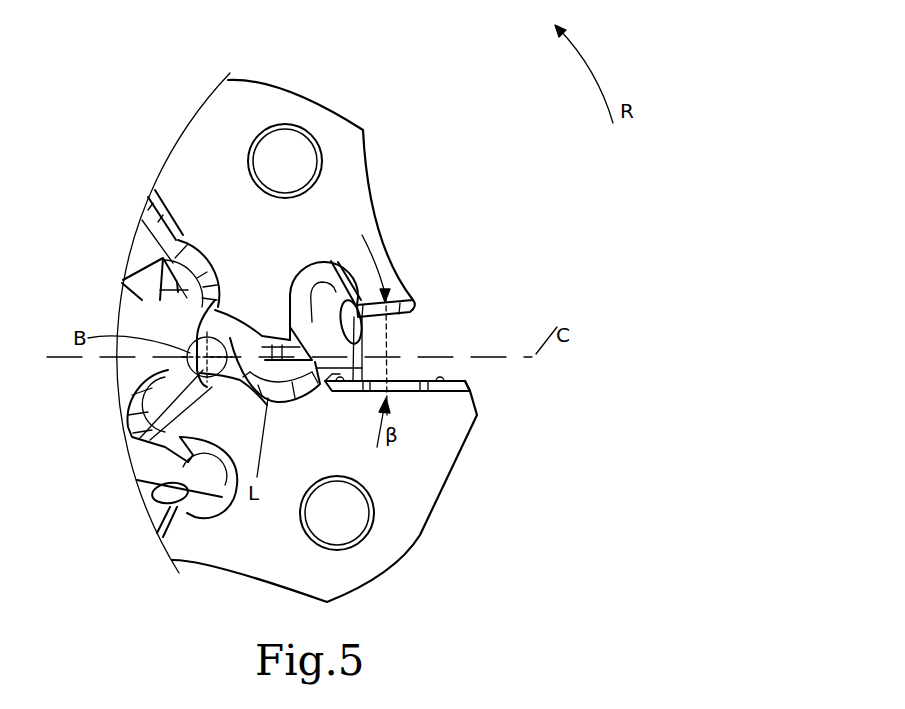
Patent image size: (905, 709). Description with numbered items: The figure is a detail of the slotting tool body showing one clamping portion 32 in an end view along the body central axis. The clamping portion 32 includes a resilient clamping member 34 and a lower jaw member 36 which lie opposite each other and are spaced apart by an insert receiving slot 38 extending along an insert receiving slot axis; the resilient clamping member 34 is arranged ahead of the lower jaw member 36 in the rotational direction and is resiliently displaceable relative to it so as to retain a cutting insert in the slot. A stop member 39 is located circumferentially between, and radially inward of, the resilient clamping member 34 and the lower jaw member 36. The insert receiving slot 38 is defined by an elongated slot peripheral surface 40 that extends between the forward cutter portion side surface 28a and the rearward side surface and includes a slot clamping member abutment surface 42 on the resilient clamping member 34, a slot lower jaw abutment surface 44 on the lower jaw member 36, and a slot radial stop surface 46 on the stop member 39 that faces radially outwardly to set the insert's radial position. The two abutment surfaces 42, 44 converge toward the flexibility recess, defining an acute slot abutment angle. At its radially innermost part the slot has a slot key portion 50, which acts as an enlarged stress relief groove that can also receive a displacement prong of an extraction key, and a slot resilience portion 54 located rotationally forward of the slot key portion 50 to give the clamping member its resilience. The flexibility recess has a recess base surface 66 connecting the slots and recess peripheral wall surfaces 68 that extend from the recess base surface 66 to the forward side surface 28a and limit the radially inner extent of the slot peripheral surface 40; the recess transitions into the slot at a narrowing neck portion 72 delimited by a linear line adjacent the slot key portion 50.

The forward cutter portion side surface 28a is at (294, 552).
The clamping portion 32 is at (462, 165).
The resilient clamping member 34 is at (348, 192).
The lower jaw member 36 is at (440, 447).
The insert receiving slot 38 is at (433, 337).
The stop member 39 is at (280, 322).
The slot peripheral surface 40 is at (397, 317).
The slot clamping member abutment surface 42 is at (363, 310).
The slot lower jaw abutment surface 44 is at (338, 381).
The slot radial stop surface 46 is at (341, 328).
The slot key portion 50 is at (285, 378).
The slot resilience portion 54 is at (316, 291).
The recess base surface 66 is at (215, 345).
The recess peripheral wall surface 68 is at (197, 333).
The narrowing neck portion 72 is at (248, 393).